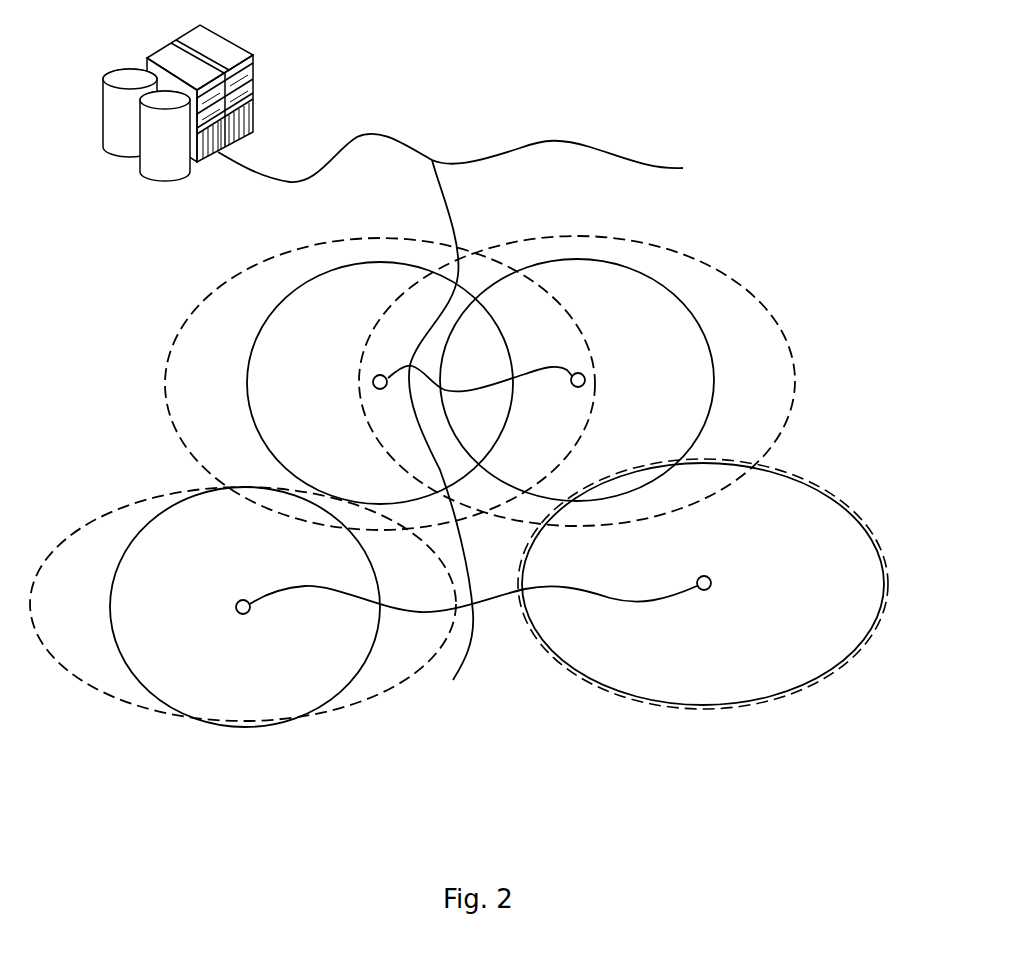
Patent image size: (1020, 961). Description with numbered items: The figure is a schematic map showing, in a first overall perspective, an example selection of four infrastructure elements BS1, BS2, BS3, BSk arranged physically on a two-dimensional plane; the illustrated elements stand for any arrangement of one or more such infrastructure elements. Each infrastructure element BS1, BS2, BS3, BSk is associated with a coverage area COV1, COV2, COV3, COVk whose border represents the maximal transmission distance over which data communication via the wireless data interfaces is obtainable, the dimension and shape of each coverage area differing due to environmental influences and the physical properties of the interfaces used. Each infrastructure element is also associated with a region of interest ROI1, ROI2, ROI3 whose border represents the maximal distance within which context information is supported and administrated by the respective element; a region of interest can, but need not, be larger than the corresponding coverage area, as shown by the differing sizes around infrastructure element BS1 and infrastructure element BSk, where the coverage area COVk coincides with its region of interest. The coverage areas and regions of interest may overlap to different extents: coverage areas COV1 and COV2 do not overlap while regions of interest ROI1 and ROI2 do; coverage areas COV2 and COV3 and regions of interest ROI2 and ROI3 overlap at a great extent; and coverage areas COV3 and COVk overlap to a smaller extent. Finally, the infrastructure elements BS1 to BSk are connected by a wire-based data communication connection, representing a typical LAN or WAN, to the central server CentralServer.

The central server CentralServer is at (260, 50).
The region of interest of infrastructure element BS1 ROI1 is at (128, 713).
The region of interest of infrastructure element BS2 ROI2 is at (222, 280).
The region of interest of infrastructure element BS3 ROI3 is at (737, 272).
The coverage area of infrastructure element BS1 COV1 is at (245, 730).
The coverage area of infrastructure element BS2 COV2 is at (378, 260).
The coverage area of infrastructure element BS3 COV3 is at (577, 259).
The coverage area of infrastructure element BSk COVk is at (706, 710).
The infrastructure element BS1 is at (242, 618).
The infrastructure element BS2 is at (378, 394).
The infrastructure element BS3 is at (574, 393).
The infrastructure element BSk is at (703, 595).